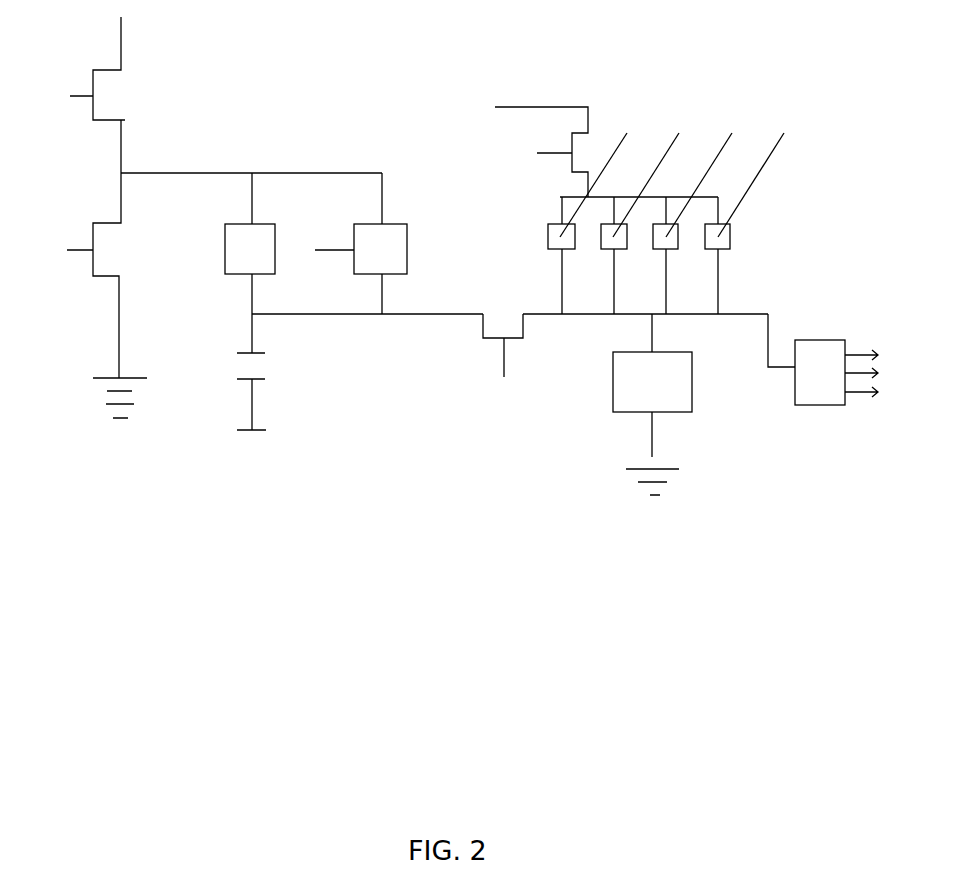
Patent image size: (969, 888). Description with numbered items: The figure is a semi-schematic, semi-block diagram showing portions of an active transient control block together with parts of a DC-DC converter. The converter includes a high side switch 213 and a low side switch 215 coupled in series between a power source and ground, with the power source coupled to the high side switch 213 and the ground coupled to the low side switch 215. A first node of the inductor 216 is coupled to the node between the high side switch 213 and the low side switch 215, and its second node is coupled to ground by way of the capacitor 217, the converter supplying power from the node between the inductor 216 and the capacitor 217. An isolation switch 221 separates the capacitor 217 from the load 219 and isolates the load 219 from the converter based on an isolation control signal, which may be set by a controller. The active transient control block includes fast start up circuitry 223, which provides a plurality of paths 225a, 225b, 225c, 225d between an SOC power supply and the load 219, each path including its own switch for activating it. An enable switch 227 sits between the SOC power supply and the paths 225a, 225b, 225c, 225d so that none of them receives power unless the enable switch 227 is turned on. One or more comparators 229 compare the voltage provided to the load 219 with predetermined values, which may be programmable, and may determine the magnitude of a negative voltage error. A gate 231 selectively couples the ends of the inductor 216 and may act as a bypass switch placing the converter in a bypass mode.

The high side switch 213 is at (93, 67).
The low side switch 215 is at (93, 223).
The inductor 216 is at (224, 224).
The capacitor 217 is at (263, 353).
The load 219 is at (693, 407).
The isolation switch 221 is at (483, 338).
The fast start up circuitry 223 is at (638, 80).
The path 225a is at (560, 287).
The path 225b is at (613, 287).
The path 225c is at (665, 287).
The path 225d is at (718, 287).
The enable switch 227 is at (572, 133).
The comparators 229 is at (818, 339).
The gate 231 is at (393, 223).